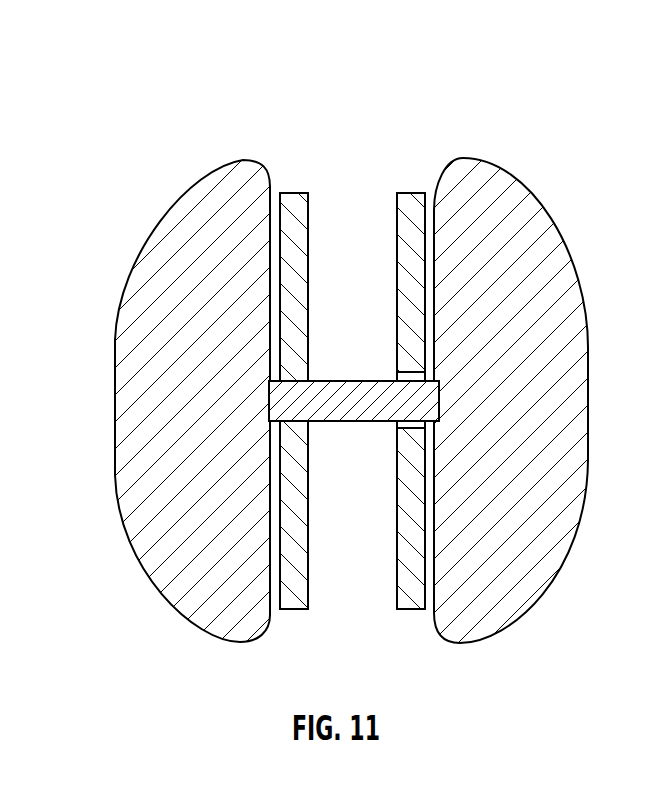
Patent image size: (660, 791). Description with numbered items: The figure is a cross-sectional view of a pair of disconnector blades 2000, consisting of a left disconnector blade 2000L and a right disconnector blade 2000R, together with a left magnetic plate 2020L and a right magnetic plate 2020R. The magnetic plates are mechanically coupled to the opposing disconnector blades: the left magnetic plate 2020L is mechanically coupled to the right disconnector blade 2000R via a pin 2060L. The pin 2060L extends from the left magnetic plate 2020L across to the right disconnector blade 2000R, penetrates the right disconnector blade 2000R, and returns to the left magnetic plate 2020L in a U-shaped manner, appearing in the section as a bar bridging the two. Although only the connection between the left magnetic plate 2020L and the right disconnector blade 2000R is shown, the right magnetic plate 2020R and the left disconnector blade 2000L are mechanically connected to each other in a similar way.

The disconnector blades 2000 is at (143, 86).
The left disconnector blade 2000L is at (152, 230).
The right disconnector blade 2000R is at (523, 189).
The left magnetic plate 2020L is at (292, 193).
The right magnetic plate 2020R is at (408, 610).
The pin 2060L is at (328, 381).